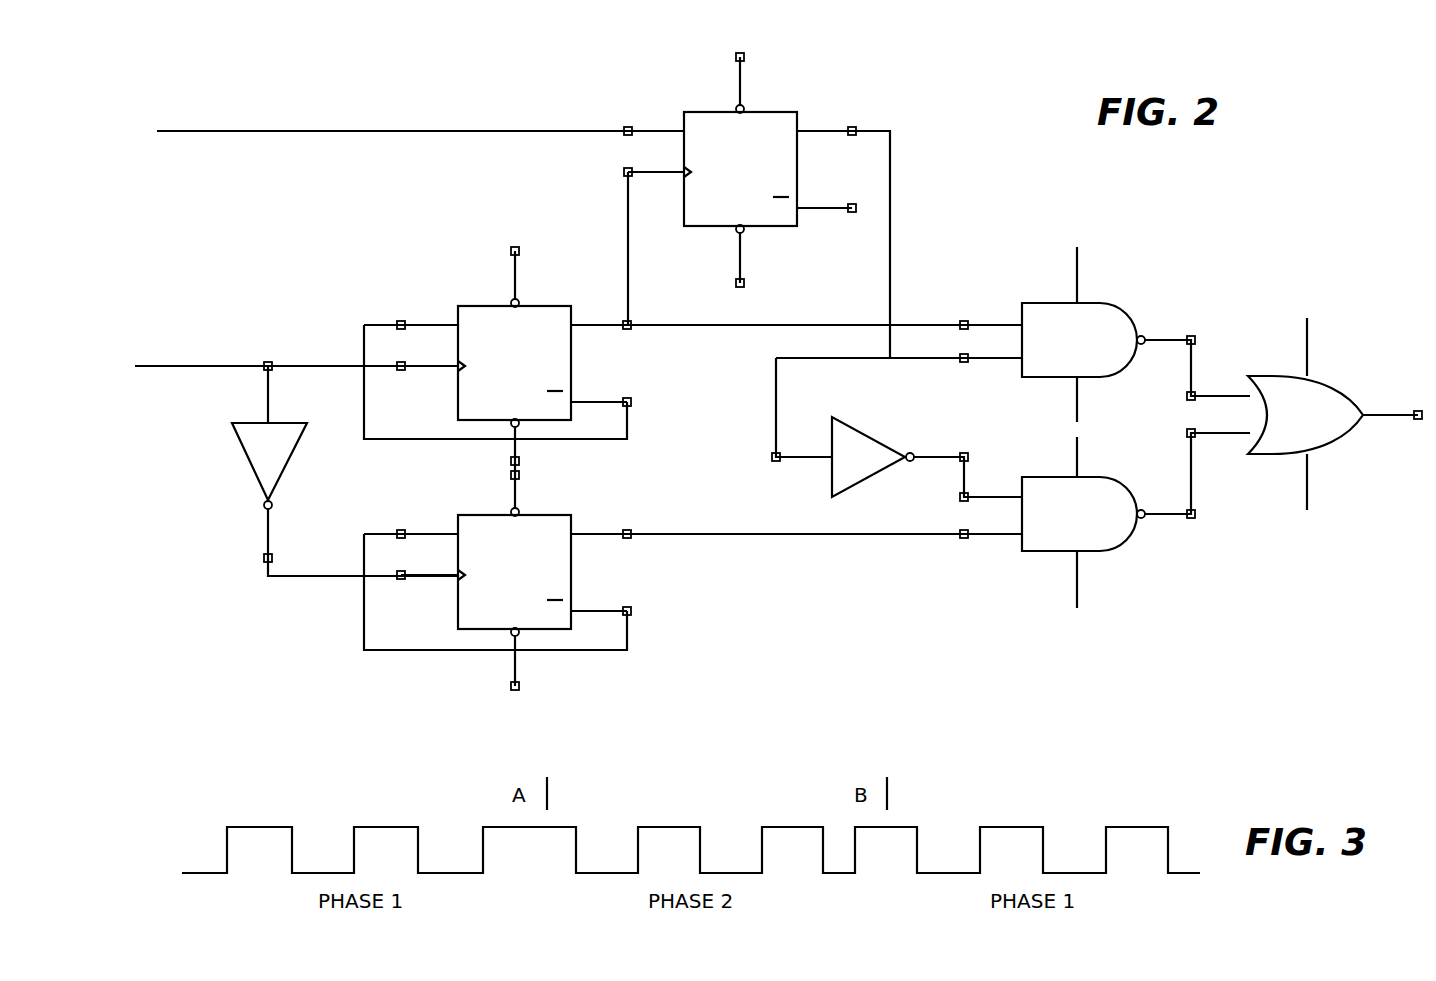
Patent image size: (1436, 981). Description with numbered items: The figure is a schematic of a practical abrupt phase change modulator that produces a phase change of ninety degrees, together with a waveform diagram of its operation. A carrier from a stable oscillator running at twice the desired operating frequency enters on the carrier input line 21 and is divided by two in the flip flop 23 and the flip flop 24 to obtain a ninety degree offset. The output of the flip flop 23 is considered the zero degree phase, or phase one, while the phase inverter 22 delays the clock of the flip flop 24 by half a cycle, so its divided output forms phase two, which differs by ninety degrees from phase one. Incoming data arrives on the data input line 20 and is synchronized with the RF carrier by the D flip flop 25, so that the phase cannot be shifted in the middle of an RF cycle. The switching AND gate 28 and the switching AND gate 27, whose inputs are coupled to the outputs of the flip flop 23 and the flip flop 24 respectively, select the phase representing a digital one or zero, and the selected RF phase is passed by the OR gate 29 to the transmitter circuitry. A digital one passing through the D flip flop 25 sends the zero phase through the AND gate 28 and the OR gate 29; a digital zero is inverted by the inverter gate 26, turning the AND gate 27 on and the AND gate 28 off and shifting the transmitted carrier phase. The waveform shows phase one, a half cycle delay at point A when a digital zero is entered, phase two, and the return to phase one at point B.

The data input line 20 is at (425, 131).
The carrier input line 21 is at (182, 368).
The phase inverter 22 is at (252, 472).
The flip flop 23 is at (468, 306).
The flip flop 24 is at (458, 612).
The D flip flop 25 is at (782, 112).
The inverter gate 26 is at (862, 480).
The switching AND gate 27 is at (1122, 544).
The switching AND gate 28 is at (1115, 308).
The OR gate 29 is at (1332, 382).